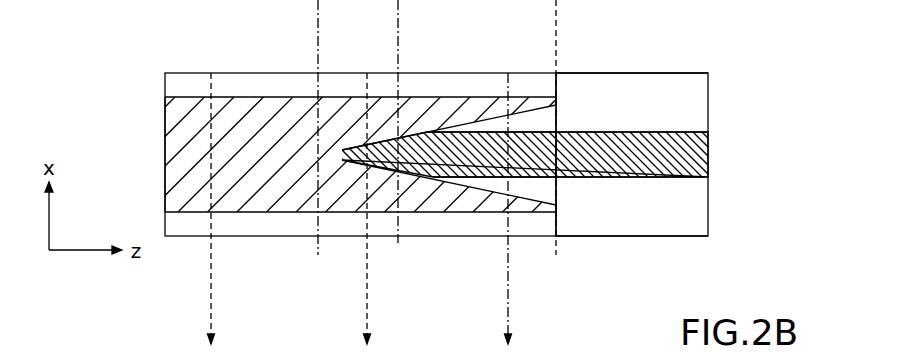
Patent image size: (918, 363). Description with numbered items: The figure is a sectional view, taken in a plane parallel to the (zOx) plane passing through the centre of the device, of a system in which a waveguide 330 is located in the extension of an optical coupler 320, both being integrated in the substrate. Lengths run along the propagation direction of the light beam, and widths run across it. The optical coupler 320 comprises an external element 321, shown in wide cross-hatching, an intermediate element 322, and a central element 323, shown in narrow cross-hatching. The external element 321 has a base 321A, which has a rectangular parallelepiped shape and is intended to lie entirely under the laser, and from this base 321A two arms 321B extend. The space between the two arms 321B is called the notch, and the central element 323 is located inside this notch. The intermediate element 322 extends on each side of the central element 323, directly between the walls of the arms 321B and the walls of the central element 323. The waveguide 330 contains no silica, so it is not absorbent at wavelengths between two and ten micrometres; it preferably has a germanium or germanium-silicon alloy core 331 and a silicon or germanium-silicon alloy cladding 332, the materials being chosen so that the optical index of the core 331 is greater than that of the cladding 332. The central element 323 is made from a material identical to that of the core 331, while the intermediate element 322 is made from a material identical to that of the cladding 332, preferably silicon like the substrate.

The optical coupler 320 is at (556, 283).
The external element 321 is at (252, 108).
The base 321A is at (177, 132).
The arms 321B is at (383, 100).
The intermediate element 322 is at (503, 125).
The central element 323 is at (415, 152).
The waveguide 330 is at (708, 283).
The core 331 is at (594, 148).
The cladding 332 is at (662, 85).